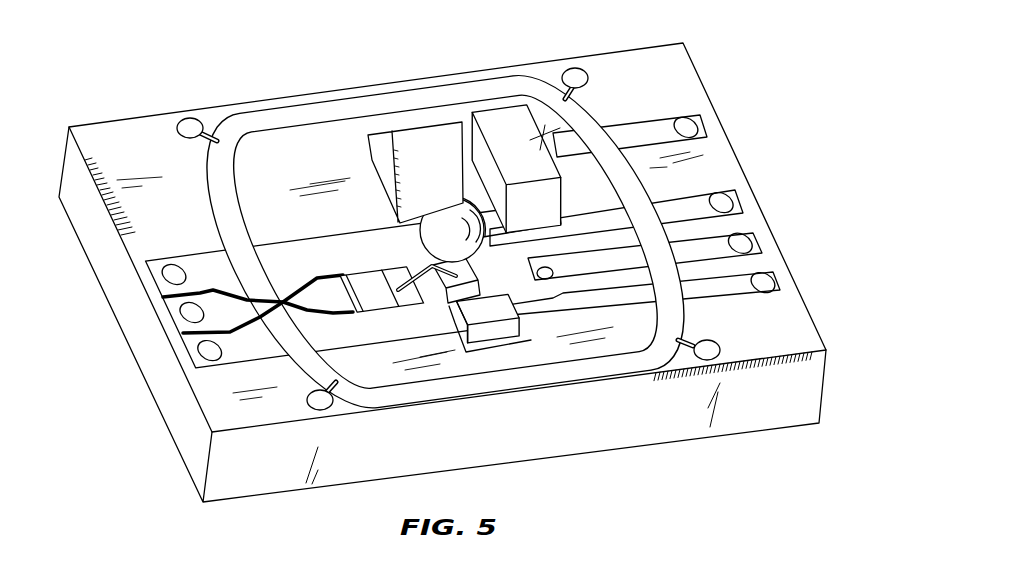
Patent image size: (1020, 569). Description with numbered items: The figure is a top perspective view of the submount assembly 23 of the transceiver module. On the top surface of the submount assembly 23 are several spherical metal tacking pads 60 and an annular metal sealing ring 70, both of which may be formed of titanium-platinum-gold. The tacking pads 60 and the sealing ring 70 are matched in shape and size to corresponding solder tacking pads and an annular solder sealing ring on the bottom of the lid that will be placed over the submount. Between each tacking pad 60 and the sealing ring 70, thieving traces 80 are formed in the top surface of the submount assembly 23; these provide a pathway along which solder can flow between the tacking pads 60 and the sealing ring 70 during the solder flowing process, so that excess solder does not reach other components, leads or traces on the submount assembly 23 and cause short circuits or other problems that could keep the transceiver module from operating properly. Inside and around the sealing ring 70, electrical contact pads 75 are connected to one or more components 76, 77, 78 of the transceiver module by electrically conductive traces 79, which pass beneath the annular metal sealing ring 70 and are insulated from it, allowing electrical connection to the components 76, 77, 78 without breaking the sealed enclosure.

The submount assembly 23 is at (604, 422).
The spherical metal tacking pads 60 is at (190, 128).
The annular metal sealing ring 70 is at (380, 100).
The electrical contact pads 75 is at (172, 273).
The component 76 is at (363, 280).
The component 77 is at (487, 318).
The component 78 is at (545, 140).
The electrically conductive traces 79 is at (278, 258).
The thieving traces 80 is at (217, 133).